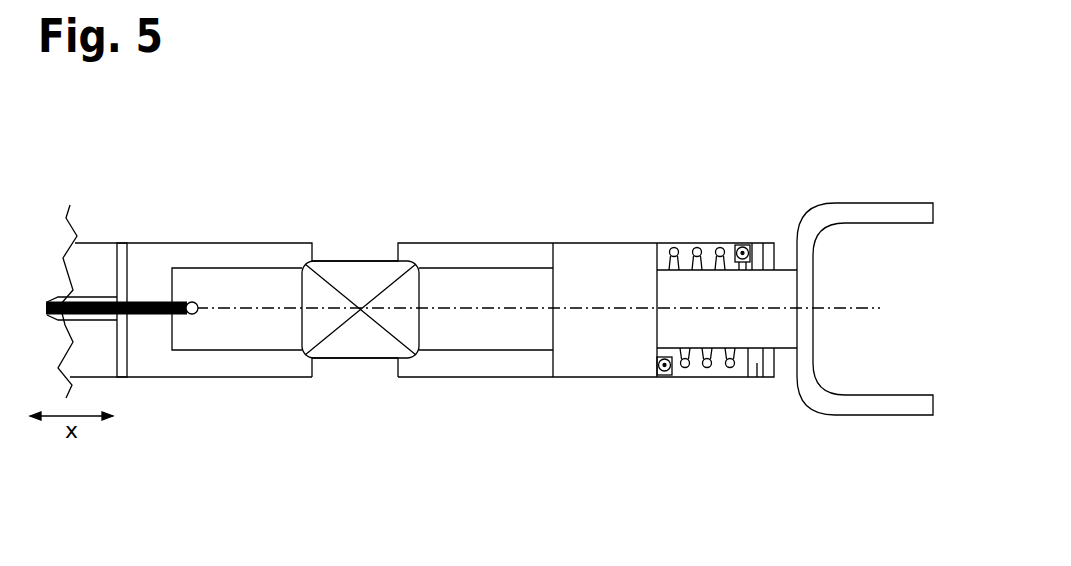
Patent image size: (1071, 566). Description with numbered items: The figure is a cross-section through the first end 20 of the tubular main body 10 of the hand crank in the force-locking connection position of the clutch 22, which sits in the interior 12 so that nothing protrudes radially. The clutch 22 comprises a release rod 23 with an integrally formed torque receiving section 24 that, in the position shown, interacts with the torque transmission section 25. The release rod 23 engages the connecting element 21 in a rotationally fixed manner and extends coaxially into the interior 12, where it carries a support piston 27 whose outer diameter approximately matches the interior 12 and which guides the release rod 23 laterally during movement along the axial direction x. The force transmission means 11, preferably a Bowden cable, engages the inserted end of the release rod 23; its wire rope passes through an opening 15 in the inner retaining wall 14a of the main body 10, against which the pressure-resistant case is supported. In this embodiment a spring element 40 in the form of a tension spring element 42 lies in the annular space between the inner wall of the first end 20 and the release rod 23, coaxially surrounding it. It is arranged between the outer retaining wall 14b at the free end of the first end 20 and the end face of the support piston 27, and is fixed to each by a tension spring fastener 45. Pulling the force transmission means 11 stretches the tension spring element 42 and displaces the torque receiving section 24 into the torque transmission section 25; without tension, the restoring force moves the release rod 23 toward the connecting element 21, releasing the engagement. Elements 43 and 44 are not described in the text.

The main body 10 is at (193, 242).
The force transmission means 11 is at (148, 297).
The interior 12 is at (235, 255).
The inner retaining wall 14a is at (152, 377).
The outer retaining wall 14b is at (755, 365).
The opening 15 is at (128, 320).
The first end 20 is at (610, 202).
The connecting element 21 is at (868, 203).
The clutch 22 is at (333, 377).
The release rod 23 is at (515, 352).
The torque receiving section 24 is at (405, 355).
The torque transmission section 25 is at (372, 310).
The support piston 27 is at (675, 310).
The spring element 40 is at (667, 181).
The tension spring element 42 is at (675, 247).
The lower pivot bearing 43 is at (664, 371).
The upper pivot bearing 44 is at (743, 247).
The tension spring fastener 45 is at (720, 247).